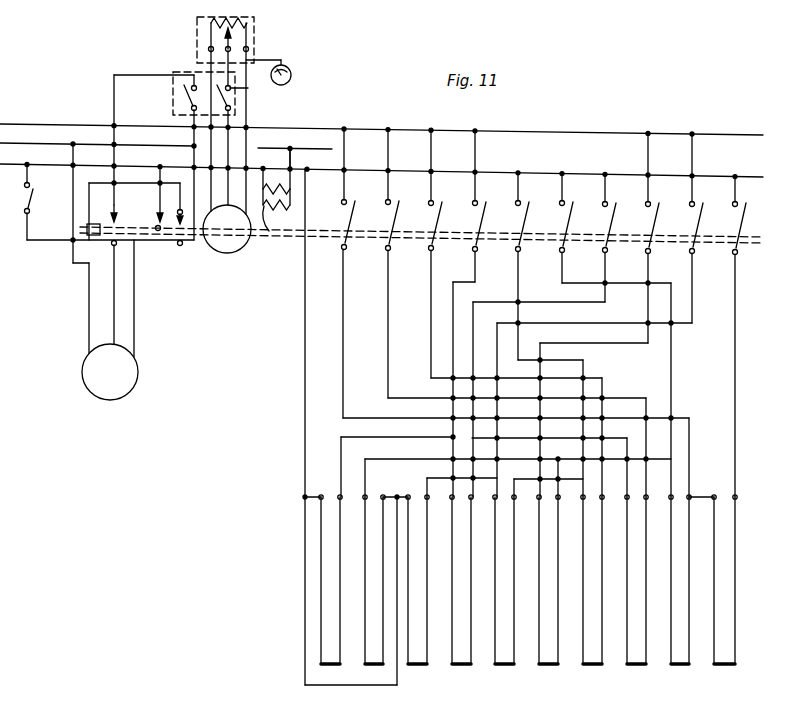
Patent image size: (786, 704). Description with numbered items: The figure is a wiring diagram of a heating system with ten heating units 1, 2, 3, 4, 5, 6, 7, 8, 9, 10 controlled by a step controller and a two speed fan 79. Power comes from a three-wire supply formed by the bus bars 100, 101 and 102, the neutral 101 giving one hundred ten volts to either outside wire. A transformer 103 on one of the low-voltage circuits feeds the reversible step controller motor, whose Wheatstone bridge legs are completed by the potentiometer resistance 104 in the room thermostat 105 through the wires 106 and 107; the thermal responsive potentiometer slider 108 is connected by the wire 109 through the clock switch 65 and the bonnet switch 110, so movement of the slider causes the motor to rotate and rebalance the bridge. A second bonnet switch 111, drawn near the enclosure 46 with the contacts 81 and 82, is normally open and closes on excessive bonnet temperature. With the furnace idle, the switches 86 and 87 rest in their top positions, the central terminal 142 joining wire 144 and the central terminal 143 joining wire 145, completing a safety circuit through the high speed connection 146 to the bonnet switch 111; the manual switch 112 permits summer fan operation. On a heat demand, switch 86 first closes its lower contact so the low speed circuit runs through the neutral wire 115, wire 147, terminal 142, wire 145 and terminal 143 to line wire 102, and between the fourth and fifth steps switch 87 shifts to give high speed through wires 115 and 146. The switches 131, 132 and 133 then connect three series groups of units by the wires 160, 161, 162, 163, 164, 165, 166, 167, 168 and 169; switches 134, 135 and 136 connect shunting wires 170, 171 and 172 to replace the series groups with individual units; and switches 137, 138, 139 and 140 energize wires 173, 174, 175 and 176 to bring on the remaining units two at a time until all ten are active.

The bus bar 100 is at (54, 128).
The neutral bus bar 101 is at (54, 148).
The bus bar 102 is at (54, 169).
The potentiometer resistance 104 is at (211, 24).
The room thermostat 105 is at (254, 23).
The wire 106 is at (200, 60).
The wire 107 is at (254, 46).
The thermal responsive potentiometer slider 108 is at (225, 46).
The wire 109 is at (290, 70).
The clock switch 65 is at (283, 85).
The switch box 46 is at (173, 78).
The thermal responsive bonnet switch 111 is at (183, 101).
The thermal responsive bonnet switch 110 is at (235, 100).
The wire 144 is at (114, 85).
The motor 81 is at (231, 247).
The shaft linkage 82 is at (199, 237).
The transformer 103 is at (284, 211).
The manual switch 112 is at (30, 187).
The central terminal 142 is at (87, 221).
The switch 86 is at (88, 241).
The central terminal 143 is at (157, 226).
The wire 145 is at (184, 190).
The switch 87 is at (170, 238).
The neutral wire 115 is at (88, 293).
The low speed circuit wire 147 is at (115, 291).
The high speed fan connection 146 is at (135, 318).
The two speed fan 79 is at (138, 378).
The wire 160 is at (305, 297).
The switch 131 is at (350, 222).
The switch 132 is at (394, 222).
The switch 133 is at (437, 222).
The switch 134 is at (481, 222).
The switch 135 is at (524, 222).
The switch 136 is at (568, 222).
The switch 137 is at (611, 222).
The switch 138 is at (654, 222).
The switch 139 is at (698, 222).
The switch 140 is at (741, 222).
The wire 163 is at (343, 290).
The wire 166 is at (388, 336).
The wire 169 is at (431, 281).
The shunting wire 170 is at (475, 271).
The shunting wire 171 is at (518, 271).
The shunting wire 172 is at (562, 271).
The wire 173 is at (605, 271).
The wire 174 is at (648, 271).
The wire 175 is at (692, 271).
The wire 176 is at (735, 271).
The wire 164 is at (385, 438).
The wire 161 is at (402, 458).
The wire 167 is at (425, 478).
The wire 165 is at (531, 438).
The wire 168 is at (531, 480).
The wire 162 is at (576, 459).
The heating unit 1 is at (324, 666).
The heating unit 2 is at (368, 666).
The heating unit 3 is at (411, 666).
The heating unit 4 is at (455, 666).
The heating unit 5 is at (498, 666).
The heating unit 6 is at (542, 666).
The heating unit 7 is at (586, 666).
The heating unit 8 is at (630, 666).
The heating unit 9 is at (674, 666).
The heating unit 10 is at (717, 666).